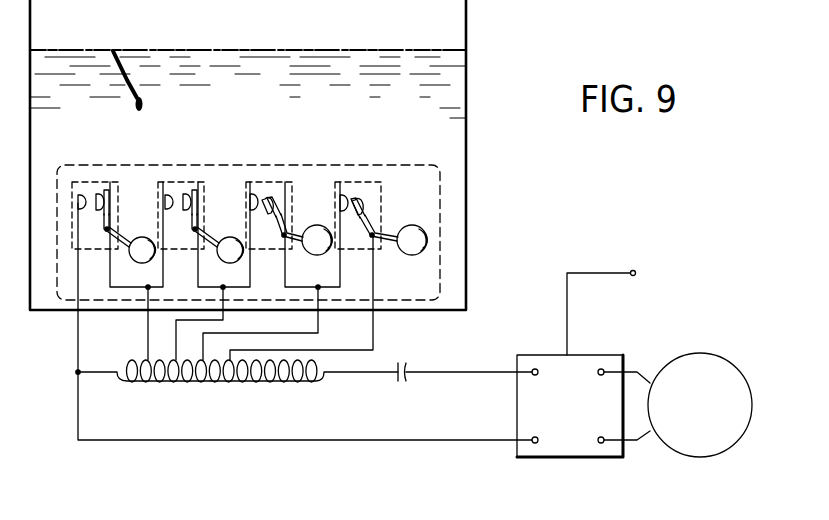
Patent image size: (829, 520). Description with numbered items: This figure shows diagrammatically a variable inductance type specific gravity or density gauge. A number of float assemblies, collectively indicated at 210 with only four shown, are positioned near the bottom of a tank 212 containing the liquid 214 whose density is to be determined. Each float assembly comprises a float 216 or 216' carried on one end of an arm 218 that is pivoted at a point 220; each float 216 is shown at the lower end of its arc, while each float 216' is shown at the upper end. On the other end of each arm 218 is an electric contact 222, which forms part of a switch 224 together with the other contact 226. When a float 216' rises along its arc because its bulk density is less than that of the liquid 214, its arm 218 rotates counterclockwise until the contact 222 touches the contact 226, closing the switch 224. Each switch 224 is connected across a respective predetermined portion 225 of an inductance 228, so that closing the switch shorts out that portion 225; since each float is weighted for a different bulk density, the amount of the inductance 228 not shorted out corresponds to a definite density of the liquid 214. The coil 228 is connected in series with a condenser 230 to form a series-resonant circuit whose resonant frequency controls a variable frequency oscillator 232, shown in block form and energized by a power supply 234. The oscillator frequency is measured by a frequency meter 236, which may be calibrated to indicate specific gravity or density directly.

The float assemblies 210 is at (253, 165).
The tank 212 is at (468, 82).
The liquid 214 is at (189, 68).
The float 216 is at (181, 261).
The float 216' is at (362, 256).
The arm 218 is at (108, 214).
The pivot point 220 is at (110, 240).
The electric contact 222 is at (194, 190).
The switch 224 is at (88, 165).
The predetermined portion of inductance 225 is at (203, 382).
The contact 226 is at (78, 203).
The inductance 228 is at (275, 385).
The condenser 230 is at (395, 385).
The variable frequency oscillator 232 is at (562, 448).
The power supply 234 is at (632, 270).
The frequency meter 236 is at (705, 447).